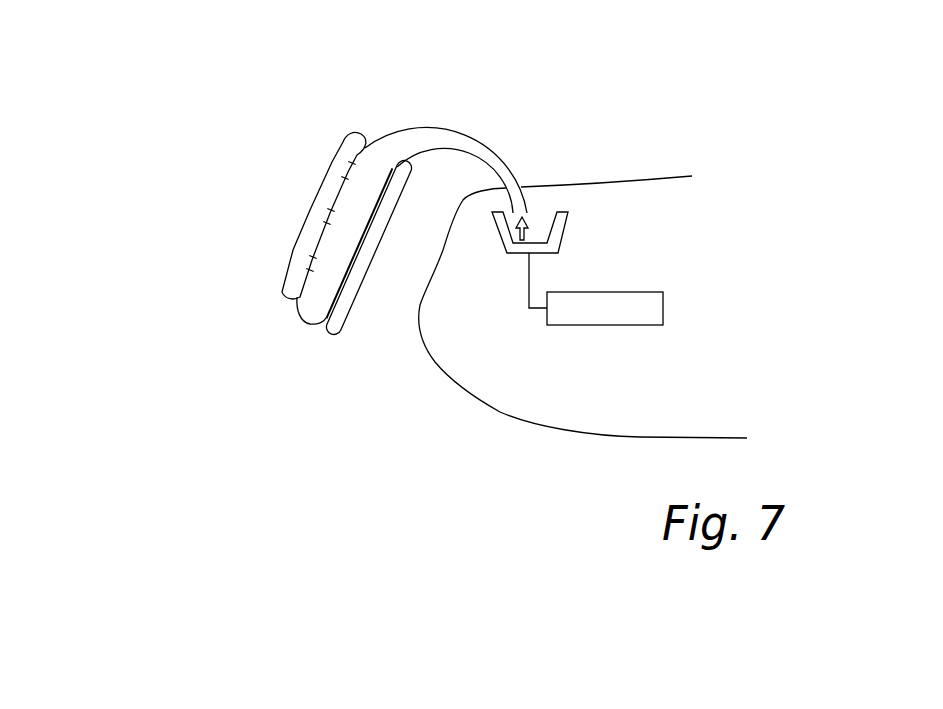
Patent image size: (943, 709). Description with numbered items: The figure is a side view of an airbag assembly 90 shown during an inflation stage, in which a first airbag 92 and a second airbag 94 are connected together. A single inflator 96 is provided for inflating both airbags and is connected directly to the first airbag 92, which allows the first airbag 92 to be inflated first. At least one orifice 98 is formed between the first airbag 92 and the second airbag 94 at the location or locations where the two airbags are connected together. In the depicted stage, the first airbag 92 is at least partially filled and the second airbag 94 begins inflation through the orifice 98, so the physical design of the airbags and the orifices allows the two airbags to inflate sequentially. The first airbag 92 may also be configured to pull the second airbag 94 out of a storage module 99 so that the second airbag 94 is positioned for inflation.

The airbag assembly 90 is at (187, 93).
The first airbag 92 is at (483, 152).
The second airbag 94 is at (350, 145).
The inflator 96 is at (605, 325).
The orifice 98 is at (329, 213).
The storage module 99 is at (565, 230).